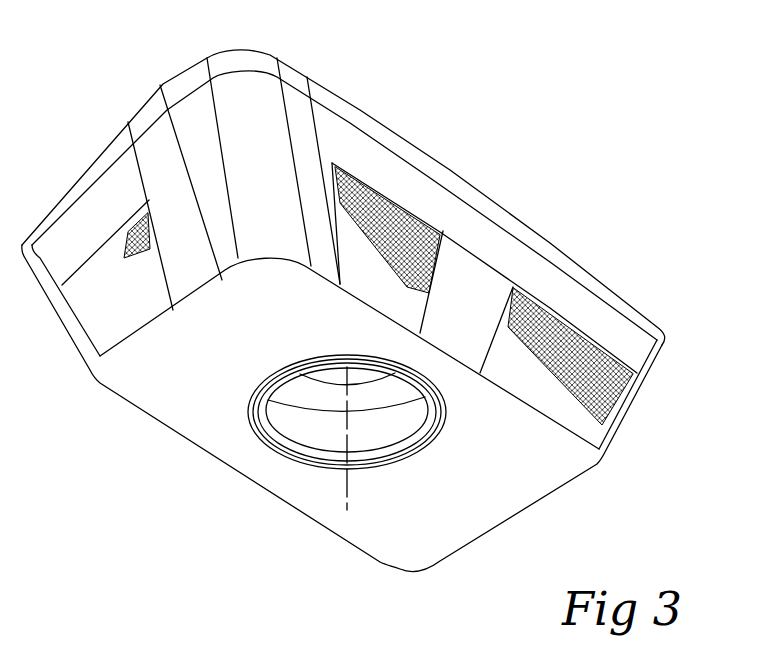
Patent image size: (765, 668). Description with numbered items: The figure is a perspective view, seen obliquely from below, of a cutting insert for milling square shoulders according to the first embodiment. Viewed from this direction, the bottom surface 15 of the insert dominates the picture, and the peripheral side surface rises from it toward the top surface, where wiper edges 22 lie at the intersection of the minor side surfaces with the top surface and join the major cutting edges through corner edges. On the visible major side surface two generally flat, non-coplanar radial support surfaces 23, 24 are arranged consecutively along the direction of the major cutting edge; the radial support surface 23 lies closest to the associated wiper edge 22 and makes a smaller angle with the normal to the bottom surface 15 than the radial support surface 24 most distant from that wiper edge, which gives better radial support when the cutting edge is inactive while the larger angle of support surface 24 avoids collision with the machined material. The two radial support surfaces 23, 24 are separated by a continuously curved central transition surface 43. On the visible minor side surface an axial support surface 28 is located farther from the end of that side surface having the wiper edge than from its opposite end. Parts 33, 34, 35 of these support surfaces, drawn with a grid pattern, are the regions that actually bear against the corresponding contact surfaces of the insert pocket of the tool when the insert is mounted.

The bottom surface 15 is at (385, 527).
The wiper edge 22 is at (190, 67).
The radial support surface 23 is at (362, 272).
The radial support surface 24 is at (520, 377).
The axial support surface 28 is at (103, 310).
The part of support surface 33 is at (388, 217).
The part of support surface 34 is at (565, 350).
The part of support surface 35 is at (133, 240).
The central transition surface 43 is at (472, 277).